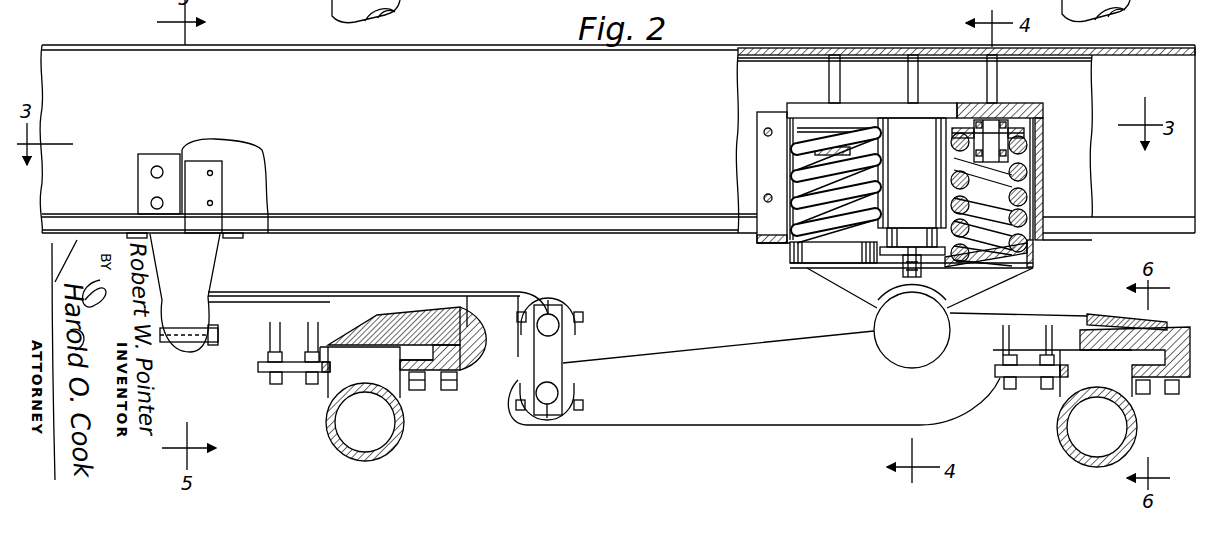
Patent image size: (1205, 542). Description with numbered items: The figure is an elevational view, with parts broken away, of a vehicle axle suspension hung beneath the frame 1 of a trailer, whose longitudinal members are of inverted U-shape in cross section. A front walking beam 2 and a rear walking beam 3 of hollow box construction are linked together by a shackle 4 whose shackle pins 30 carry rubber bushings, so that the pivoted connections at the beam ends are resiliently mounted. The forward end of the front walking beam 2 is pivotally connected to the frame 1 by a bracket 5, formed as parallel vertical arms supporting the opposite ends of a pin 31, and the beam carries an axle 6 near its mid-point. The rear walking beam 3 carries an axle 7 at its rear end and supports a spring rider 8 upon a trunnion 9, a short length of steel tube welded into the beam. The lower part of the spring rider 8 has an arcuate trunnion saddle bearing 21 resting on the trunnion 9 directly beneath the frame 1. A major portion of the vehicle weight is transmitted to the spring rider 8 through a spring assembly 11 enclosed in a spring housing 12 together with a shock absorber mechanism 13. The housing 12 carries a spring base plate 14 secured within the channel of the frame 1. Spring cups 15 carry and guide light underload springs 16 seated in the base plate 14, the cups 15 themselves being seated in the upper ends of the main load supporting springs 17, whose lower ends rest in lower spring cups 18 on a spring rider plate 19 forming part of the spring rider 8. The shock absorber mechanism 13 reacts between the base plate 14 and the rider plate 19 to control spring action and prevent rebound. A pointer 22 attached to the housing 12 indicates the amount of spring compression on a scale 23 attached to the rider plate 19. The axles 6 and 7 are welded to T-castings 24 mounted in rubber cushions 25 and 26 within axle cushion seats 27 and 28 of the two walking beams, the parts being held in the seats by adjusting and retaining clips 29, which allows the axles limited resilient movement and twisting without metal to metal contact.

The frame 1 is at (795, 47).
The front walking beam 2 is at (283, 292).
The rear walking beam 3 is at (758, 347).
The shackle 4 is at (553, 372).
The bracket 5 is at (215, 252).
The axle 6 is at (380, 457).
The axle 7 is at (1070, 450).
The spring rider 8 is at (988, 283).
The trunnion 9 is at (873, 318).
The spring assembly 11 is at (1010, 127).
The spring housing 12 is at (1043, 150).
The shock absorber mechanism 13 is at (898, 120).
The spring base plate 14 is at (798, 110).
The spring cups 15 is at (1043, 128).
The light underload springs 16 is at (985, 127).
The main load supporting springs 17 is at (1027, 172).
The lower spring cups 18 is at (792, 255).
The spring rider plate 19 is at (1033, 268).
The trunnion saddle bearing 21 is at (858, 298).
The pointer 22 is at (910, 247).
The scale 23 is at (900, 277).
The T-castings 24 is at (330, 400).
The rubber cushion 25 is at (457, 320).
The rubber cushion 26 is at (432, 373).
The axle cushion seat 27 is at (412, 318).
The axle cushion seat 28 is at (1167, 330).
The adjusting and retaining clips 29 is at (268, 375).
The shackle pins 30 is at (553, 322).
The pin 31 is at (192, 360).